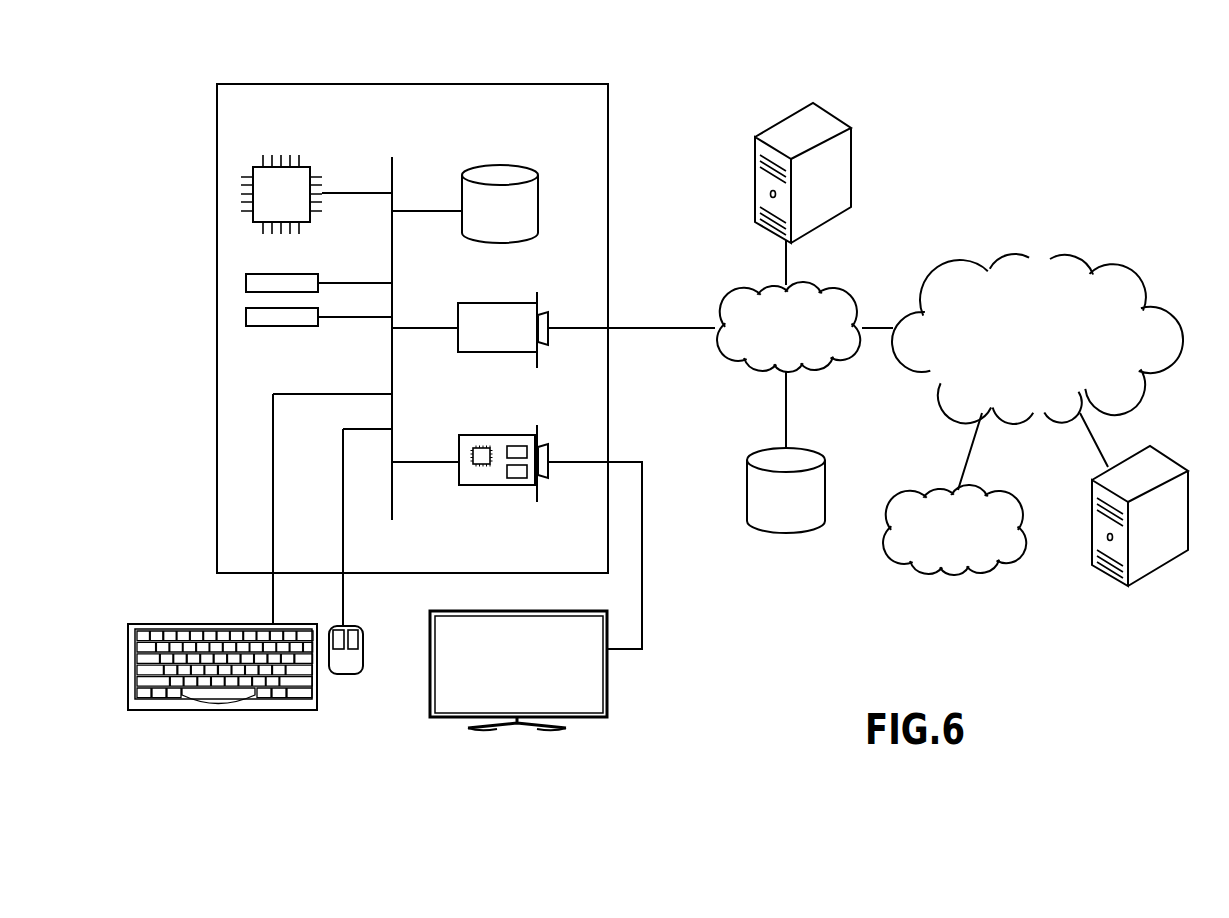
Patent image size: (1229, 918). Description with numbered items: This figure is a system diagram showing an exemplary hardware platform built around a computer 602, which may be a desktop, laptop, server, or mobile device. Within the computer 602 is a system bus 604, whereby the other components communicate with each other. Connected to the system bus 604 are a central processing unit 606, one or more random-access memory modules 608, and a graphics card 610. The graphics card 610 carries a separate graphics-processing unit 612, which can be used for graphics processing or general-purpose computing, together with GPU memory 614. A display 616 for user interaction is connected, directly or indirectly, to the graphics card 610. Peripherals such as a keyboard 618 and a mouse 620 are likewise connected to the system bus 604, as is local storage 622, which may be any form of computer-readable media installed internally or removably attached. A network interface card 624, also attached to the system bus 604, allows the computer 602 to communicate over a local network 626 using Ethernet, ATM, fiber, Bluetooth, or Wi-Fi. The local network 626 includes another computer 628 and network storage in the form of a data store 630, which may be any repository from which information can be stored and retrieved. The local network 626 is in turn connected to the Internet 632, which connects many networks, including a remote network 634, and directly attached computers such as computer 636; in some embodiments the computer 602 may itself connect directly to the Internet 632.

The computer 602 is at (565, 83).
The system bus 604 is at (393, 162).
The central processing unit 606 is at (305, 161).
The random-access memory modules 608 is at (320, 284).
The graphics card 610 is at (459, 443).
The graphics-processing unit 612 is at (481, 467).
The GPU memory 614 is at (517, 478).
The display 616 is at (607, 698).
The keyboard 618 is at (225, 710).
The mouse 620 is at (342, 674).
The local storage 622 is at (540, 192).
The network interface card 624 is at (458, 310).
The local network 626 is at (835, 287).
The computer 628 is at (833, 112).
The data store 630 is at (815, 450).
The Internet 632 is at (1078, 252).
The remote network 634 is at (1005, 492).
The computer 636 is at (1167, 450).